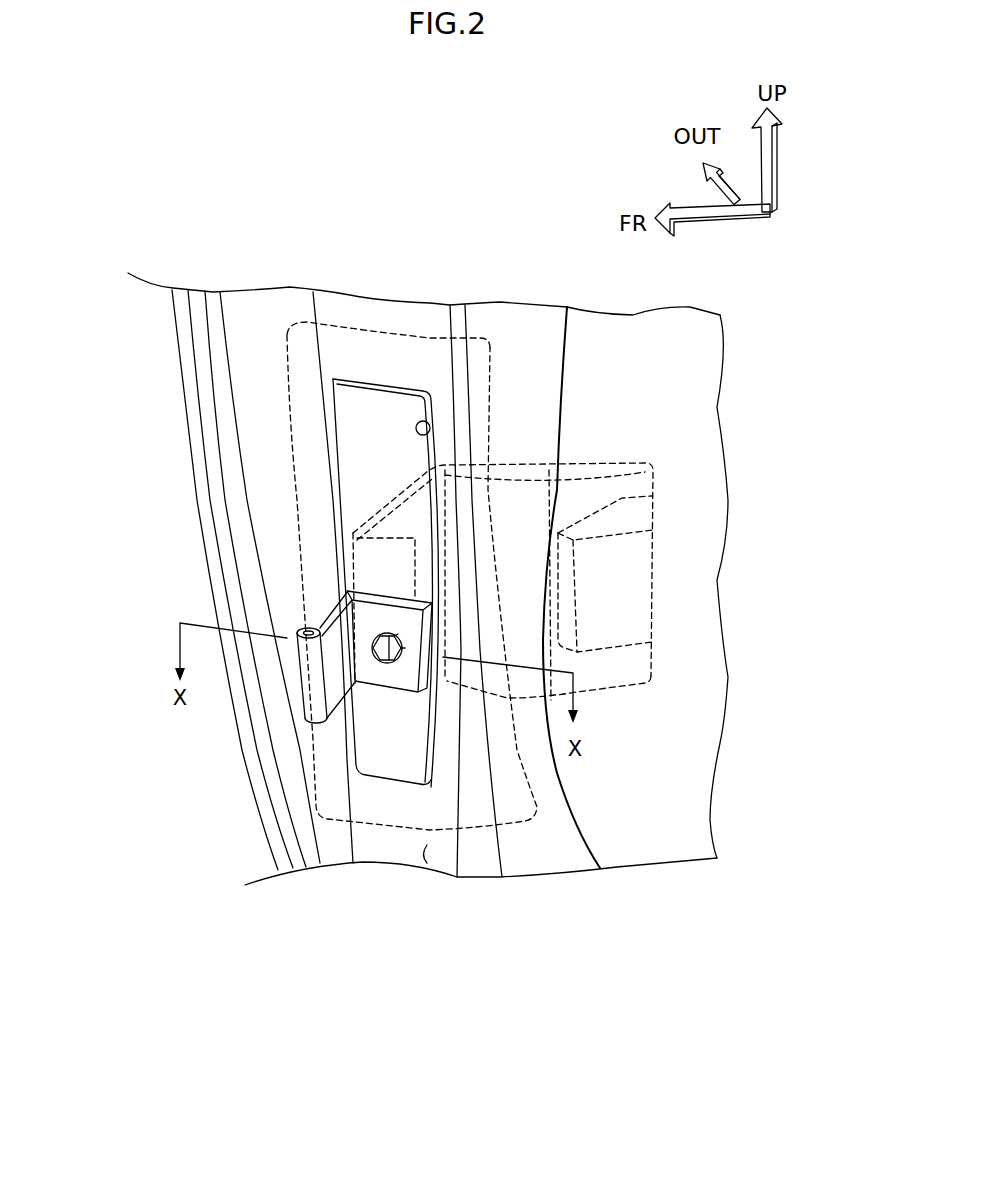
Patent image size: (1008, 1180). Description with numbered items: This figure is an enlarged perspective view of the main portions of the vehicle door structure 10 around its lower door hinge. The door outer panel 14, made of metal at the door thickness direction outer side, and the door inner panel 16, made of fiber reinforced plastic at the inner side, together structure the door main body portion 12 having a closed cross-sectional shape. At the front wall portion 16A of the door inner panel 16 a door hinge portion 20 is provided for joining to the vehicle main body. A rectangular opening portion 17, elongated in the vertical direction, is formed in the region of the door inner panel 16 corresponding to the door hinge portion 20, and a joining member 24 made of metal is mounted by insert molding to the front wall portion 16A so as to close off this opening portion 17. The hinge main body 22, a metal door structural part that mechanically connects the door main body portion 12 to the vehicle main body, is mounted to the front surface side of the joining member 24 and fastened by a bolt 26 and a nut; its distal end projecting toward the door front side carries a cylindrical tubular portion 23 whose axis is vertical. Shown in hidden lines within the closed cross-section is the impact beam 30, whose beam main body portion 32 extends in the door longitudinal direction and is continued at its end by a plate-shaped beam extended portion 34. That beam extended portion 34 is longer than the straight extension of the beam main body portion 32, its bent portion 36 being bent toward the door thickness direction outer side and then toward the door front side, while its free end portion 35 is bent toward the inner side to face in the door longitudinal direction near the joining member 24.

The vehicle door structure 10 is at (217, 820).
The door main body portion 12 is at (150, 336).
The door outer panel 14 is at (183, 413).
The door inner panel 16 is at (621, 877).
The front wall portion 16A is at (427, 845).
The opening portion 17 is at (432, 440).
The door hinge portion 20 is at (280, 764).
The hinge main body 22 is at (400, 668).
The cylindrical tubular portion 23 is at (318, 708).
The joining member 24 is at (454, 487).
The bolt 26 is at (380, 652).
The impact beam 30 is at (676, 485).
The beam main body portion 32 is at (683, 620).
The beam extended portion 34 is at (622, 667).
The free end portion 35 is at (385, 558).
The bent portion 36 is at (407, 493).